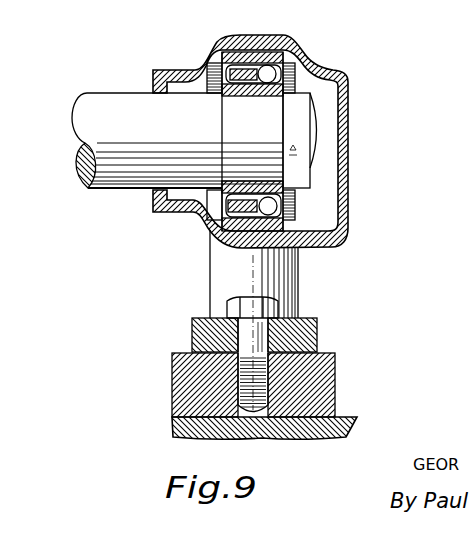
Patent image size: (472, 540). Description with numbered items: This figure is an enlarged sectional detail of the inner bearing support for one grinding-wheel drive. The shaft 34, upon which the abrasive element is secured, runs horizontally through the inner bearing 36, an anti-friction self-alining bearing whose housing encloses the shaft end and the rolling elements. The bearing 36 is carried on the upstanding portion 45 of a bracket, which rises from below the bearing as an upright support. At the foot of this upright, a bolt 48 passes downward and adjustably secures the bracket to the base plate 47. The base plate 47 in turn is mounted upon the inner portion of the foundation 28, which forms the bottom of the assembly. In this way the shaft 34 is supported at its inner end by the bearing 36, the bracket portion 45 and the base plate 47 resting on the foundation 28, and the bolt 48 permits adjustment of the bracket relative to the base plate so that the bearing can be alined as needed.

The inner bearing 36 is at (293, 44).
The shaft 34 is at (82, 138).
The upstanding portions of bracket 45 is at (293, 283).
The bolt 48 is at (233, 300).
The base plate 47 is at (337, 390).
The foundation 28 is at (357, 422).